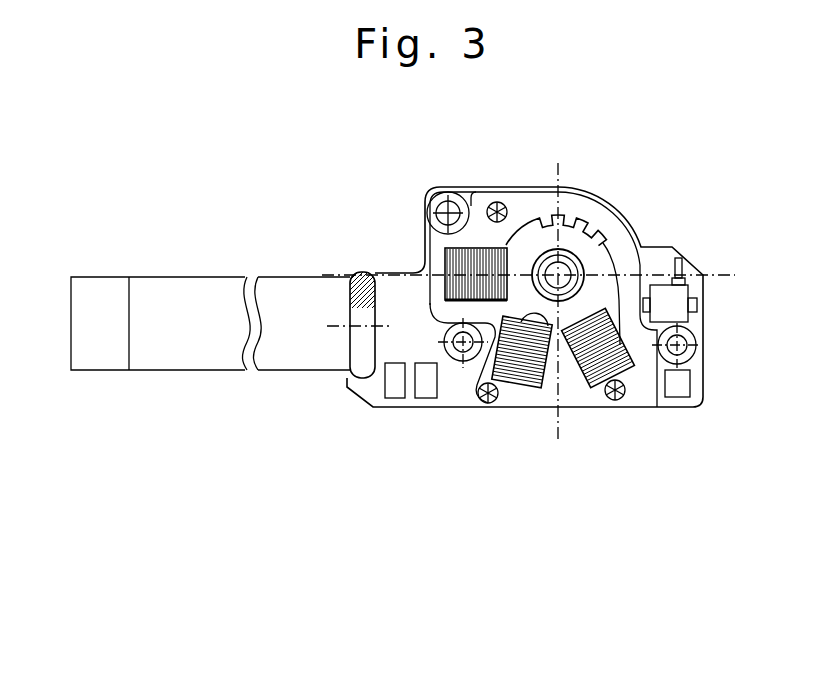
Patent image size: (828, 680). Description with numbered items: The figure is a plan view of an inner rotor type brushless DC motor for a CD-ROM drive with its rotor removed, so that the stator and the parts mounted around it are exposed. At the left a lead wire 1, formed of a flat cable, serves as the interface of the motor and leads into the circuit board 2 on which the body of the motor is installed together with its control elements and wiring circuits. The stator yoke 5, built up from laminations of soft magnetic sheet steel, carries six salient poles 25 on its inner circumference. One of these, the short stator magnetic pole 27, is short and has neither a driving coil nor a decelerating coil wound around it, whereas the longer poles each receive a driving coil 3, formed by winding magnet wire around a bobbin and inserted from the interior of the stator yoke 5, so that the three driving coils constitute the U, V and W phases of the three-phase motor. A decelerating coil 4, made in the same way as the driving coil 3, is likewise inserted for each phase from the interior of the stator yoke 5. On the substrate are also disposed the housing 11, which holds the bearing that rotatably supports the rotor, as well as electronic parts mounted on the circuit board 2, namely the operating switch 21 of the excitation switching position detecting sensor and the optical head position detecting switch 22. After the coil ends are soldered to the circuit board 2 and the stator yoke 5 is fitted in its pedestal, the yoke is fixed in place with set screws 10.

The lead wire 1 is at (276, 295).
The circuit board 2 is at (385, 281).
The driving coil 3 is at (437, 235).
The decelerating coil 4 is at (486, 247).
The stator yoke 5 is at (532, 202).
The set screw 10 is at (499, 207).
The housing 11 is at (599, 239).
The operating switch 21 is at (672, 398).
The optical head position detecting switch 22 is at (665, 305).
The salient pole 25 is at (630, 225).
The short stator magnetic pole 27 is at (576, 248).